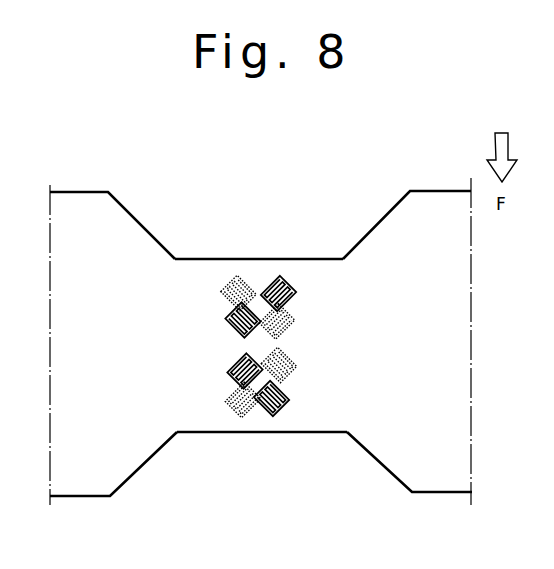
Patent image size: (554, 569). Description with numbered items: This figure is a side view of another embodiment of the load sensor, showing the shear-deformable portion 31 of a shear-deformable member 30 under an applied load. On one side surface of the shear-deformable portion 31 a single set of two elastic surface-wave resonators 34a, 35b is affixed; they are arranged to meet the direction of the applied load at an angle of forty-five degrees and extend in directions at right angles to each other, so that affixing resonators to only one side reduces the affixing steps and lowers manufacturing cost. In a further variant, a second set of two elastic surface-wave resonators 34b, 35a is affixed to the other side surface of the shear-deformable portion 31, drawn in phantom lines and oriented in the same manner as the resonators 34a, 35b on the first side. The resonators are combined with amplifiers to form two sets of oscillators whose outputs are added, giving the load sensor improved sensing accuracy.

The shear-deformable member 30 is at (77, 207).
The shear-deformable portion 31 is at (200, 280).
The elastic surface-wave resonator 34a is at (290, 292).
The elastic surface-wave resonator 34b is at (292, 317).
The elastic surface-wave resonator 35a is at (292, 369).
The elastic surface-wave resonator 35b is at (288, 400).